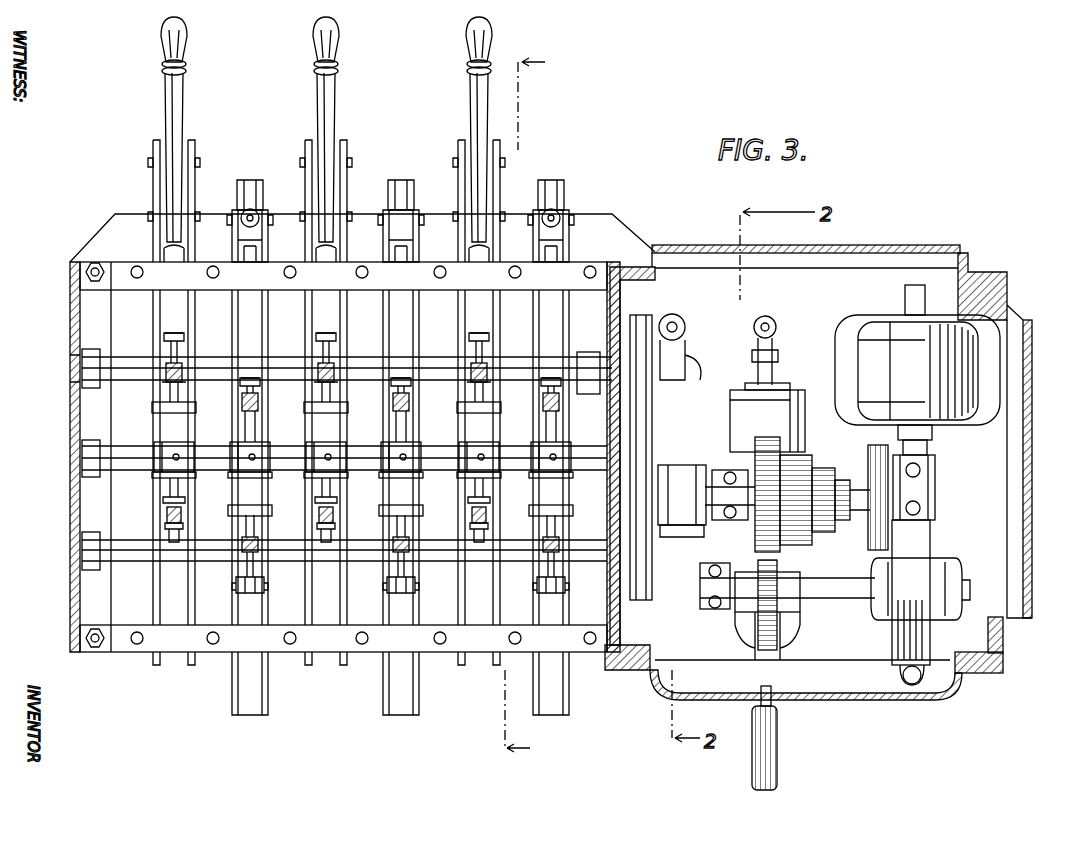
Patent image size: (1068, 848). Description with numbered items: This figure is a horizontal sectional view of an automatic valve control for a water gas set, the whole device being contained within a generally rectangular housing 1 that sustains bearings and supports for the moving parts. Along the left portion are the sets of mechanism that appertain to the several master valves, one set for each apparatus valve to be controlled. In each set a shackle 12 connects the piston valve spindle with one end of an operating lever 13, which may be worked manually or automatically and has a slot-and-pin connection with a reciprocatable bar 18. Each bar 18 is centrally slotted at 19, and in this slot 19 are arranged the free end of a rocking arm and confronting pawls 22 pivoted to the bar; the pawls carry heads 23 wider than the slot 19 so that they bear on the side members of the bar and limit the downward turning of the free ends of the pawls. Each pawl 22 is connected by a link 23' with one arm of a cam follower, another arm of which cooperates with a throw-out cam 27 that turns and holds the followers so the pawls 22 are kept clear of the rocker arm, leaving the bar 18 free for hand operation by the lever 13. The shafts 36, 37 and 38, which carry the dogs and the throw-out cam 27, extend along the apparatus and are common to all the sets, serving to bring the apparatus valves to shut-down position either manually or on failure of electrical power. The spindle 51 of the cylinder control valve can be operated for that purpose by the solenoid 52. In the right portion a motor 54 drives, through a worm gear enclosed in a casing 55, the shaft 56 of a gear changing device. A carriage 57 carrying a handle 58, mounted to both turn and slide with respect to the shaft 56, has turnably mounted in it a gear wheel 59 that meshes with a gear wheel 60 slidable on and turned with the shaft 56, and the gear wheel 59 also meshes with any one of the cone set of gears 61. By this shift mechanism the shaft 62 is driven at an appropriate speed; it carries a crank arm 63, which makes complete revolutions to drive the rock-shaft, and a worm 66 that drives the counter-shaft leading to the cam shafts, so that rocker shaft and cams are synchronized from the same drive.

The housing 1 is at (76, 323).
The shackle 12 is at (402, 182).
The operating lever 13 is at (188, 114).
The reciprocatable bar 18 is at (194, 186).
The slot 19 is at (544, 443).
The pawls 22 is at (476, 392).
The heads 23 is at (362, 460).
The link 23' is at (365, 463).
The throw-out cam 27 is at (160, 450).
The shaft 36 is at (117, 537).
The shaft 37 is at (125, 354).
The shaft 38 is at (118, 450).
The spindle 51 is at (765, 318).
The solenoid 52 is at (730, 407).
The motor 54 is at (958, 350).
The casing 55 is at (928, 535).
The shaft 56 is at (840, 584).
The carriage 57 is at (799, 645).
The handle 58 is at (779, 745).
The gear wheel 59 is at (758, 624).
The gear wheel 60 is at (756, 558).
The cone set of gears 61 is at (799, 538).
The shaft 62 is at (940, 503).
The crank arm 63 is at (695, 528).
The worm 66 is at (870, 458).